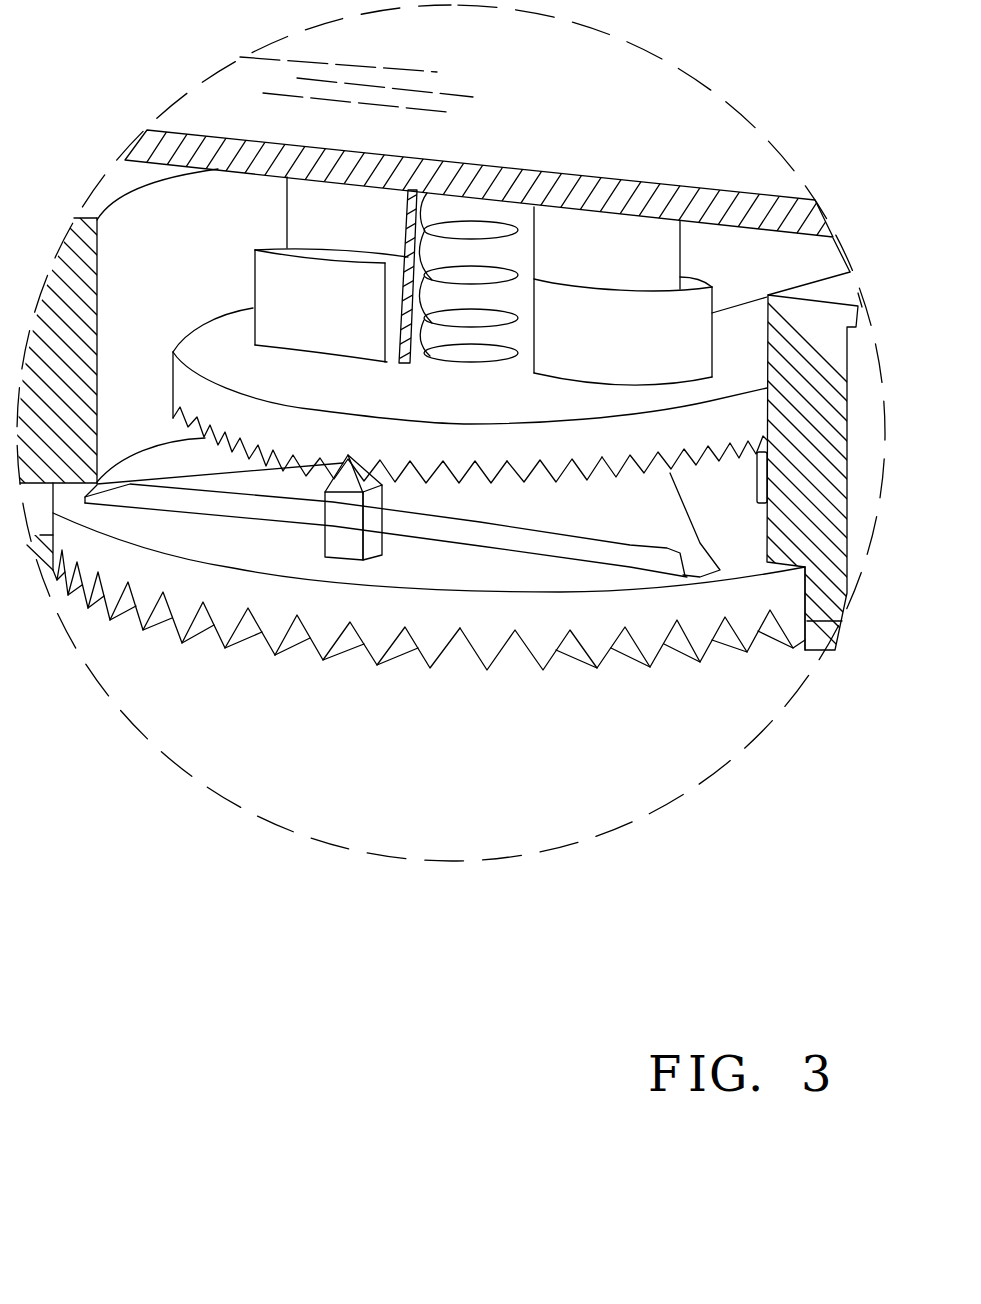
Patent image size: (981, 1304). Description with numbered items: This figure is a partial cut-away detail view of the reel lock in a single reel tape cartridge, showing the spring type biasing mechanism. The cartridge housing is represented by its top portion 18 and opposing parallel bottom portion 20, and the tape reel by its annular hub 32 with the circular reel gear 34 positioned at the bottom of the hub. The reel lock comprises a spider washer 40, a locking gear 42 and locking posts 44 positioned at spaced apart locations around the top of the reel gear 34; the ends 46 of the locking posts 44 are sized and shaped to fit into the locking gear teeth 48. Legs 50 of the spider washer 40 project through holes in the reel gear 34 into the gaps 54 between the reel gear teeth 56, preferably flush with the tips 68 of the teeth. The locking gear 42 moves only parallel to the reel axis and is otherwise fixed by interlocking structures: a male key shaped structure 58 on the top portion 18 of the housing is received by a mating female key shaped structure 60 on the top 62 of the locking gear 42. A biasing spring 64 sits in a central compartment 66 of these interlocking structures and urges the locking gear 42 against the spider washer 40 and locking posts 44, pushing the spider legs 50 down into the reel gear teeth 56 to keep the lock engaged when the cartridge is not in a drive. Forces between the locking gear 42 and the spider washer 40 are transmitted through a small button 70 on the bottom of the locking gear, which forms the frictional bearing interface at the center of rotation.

The top portion 18 is at (637, 152).
The bottom portion 20 is at (810, 650).
The annular hub 32 is at (123, 253).
The reel gear 34 is at (145, 575).
The spider washer 40 is at (487, 538).
The locking gear 42 is at (200, 347).
The locking posts 44 is at (330, 545).
The ends 46 is at (375, 485).
The locking gear teeth 48 is at (660, 477).
The legs 50 is at (702, 560).
The gaps 54 is at (355, 660).
The reel gear teeth 56 is at (620, 660).
The male key shaped structure 58 is at (297, 208).
The female key shaped structure 60 is at (705, 303).
The top 62 is at (326, 395).
The biasing spring 64 is at (463, 360).
The central compartment 66 is at (478, 209).
The tips 68 is at (182, 645).
The button 70 is at (507, 487).